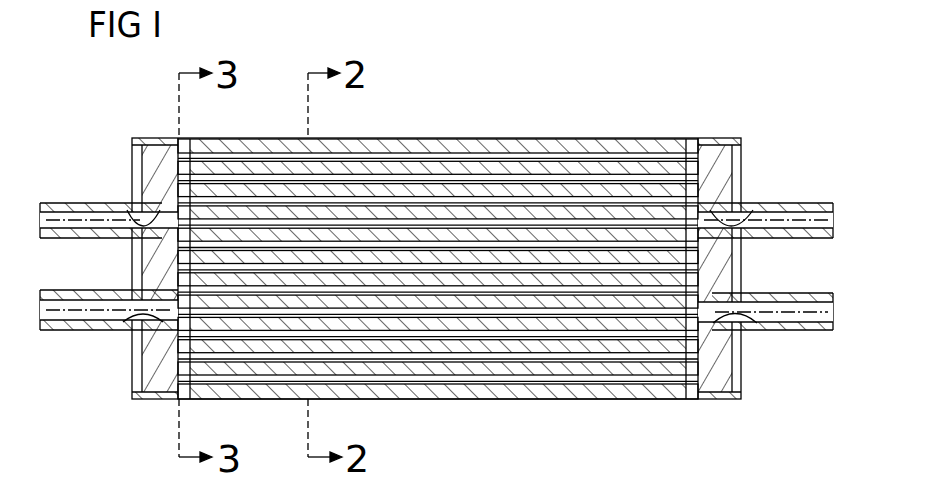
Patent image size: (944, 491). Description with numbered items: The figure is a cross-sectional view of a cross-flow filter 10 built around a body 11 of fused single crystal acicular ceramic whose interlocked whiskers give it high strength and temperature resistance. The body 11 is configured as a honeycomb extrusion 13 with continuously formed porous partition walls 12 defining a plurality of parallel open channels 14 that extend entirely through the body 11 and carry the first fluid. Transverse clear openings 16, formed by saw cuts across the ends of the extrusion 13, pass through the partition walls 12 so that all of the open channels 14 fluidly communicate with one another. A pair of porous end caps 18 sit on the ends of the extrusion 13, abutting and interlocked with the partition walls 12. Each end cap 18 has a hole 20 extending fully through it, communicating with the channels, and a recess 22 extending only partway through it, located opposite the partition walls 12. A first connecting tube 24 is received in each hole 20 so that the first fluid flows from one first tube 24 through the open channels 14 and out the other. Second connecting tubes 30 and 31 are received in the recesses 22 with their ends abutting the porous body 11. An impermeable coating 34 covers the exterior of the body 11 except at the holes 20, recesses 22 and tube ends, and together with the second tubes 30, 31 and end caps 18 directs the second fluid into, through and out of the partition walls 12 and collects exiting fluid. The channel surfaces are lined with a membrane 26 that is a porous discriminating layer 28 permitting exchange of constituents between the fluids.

The cross-flow filter 10 is at (576, 116).
The body 11 is at (470, 140).
The partition walls 12 is at (285, 195).
The honeycomb extrusion 13 is at (611, 142).
The open channels 14 is at (530, 200).
The transverse clear openings 16 is at (190, 215).
The porous end caps 18 is at (165, 155).
The hole 20 is at (122, 320).
The recess 22 is at (138, 208).
The first connecting tube 24 is at (82, 331).
The membrane 26 is at (355, 157).
The porous discriminating layer 28 is at (418, 157).
The second connecting tube 30 is at (775, 293).
The second connecting tube 31 is at (93, 239).
The impermeable coating 34 is at (666, 141).